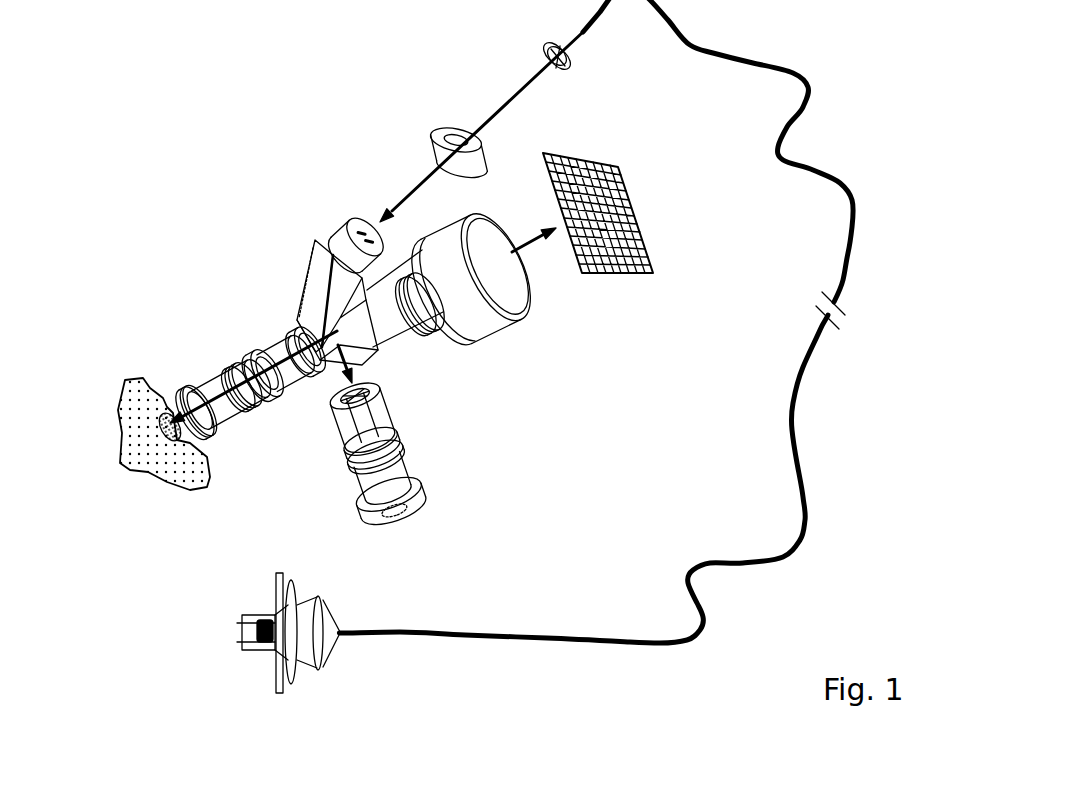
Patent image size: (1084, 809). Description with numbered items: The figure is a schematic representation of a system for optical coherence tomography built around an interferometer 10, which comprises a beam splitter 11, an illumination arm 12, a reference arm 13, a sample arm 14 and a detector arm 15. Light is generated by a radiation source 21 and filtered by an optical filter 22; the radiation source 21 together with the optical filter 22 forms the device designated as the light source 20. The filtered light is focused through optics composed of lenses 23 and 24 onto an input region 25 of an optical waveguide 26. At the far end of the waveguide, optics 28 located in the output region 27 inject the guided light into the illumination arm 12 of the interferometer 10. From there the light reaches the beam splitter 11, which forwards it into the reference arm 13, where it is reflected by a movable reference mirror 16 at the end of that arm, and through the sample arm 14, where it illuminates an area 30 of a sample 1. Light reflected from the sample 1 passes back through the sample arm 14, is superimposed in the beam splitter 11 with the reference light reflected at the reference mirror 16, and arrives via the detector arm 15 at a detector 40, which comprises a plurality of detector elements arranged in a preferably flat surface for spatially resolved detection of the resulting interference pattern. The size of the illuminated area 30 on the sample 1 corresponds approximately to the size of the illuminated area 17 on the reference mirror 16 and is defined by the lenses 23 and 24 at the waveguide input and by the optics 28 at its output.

The sample 1 is at (143, 462).
The interferometer 10 is at (204, 214).
The beam splitter 11 is at (362, 360).
The illumination arm 12 is at (313, 222).
The reference arm 13 is at (387, 474).
The sample arm 14 is at (285, 325).
The detector arm 15 is at (523, 303).
The reference mirror 16 is at (377, 524).
The illuminated area 17 is at (400, 517).
The light source 20 is at (296, 640).
The radiation source 21 is at (247, 652).
The optical filter 22 is at (280, 683).
The lens 23 is at (295, 680).
The lens 24 is at (317, 667).
The input region 25 is at (339, 632).
The optical waveguide 26 is at (542, 638).
The output region 27 is at (583, 32).
The optics 28 is at (538, 32).
The illuminated area 30 is at (158, 412).
The detector 40 is at (600, 273).